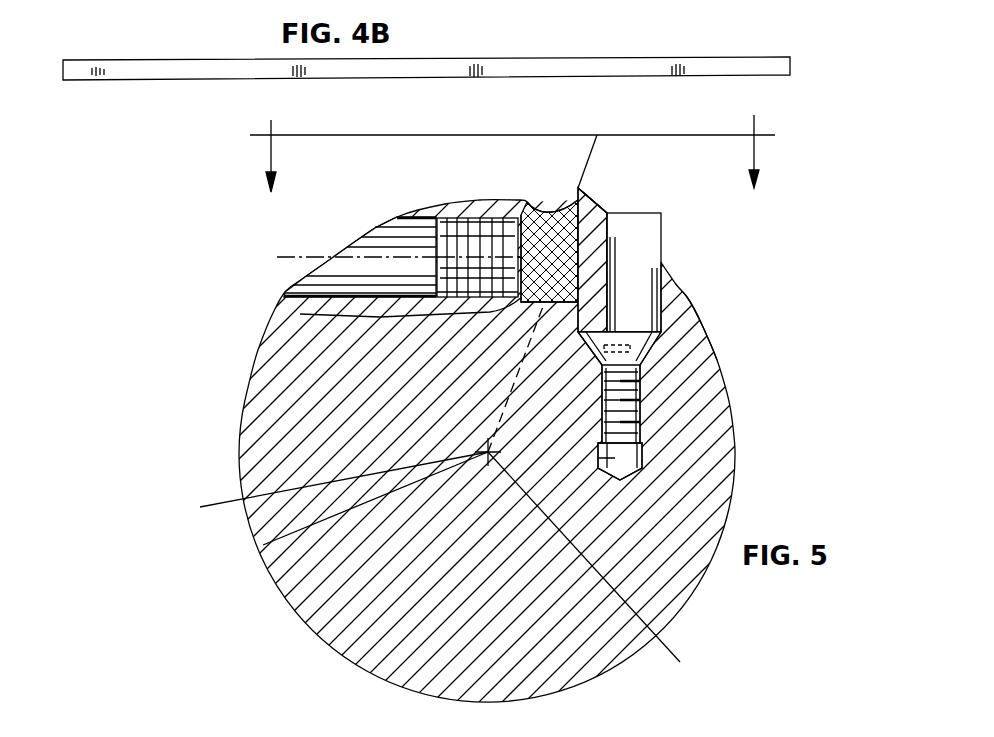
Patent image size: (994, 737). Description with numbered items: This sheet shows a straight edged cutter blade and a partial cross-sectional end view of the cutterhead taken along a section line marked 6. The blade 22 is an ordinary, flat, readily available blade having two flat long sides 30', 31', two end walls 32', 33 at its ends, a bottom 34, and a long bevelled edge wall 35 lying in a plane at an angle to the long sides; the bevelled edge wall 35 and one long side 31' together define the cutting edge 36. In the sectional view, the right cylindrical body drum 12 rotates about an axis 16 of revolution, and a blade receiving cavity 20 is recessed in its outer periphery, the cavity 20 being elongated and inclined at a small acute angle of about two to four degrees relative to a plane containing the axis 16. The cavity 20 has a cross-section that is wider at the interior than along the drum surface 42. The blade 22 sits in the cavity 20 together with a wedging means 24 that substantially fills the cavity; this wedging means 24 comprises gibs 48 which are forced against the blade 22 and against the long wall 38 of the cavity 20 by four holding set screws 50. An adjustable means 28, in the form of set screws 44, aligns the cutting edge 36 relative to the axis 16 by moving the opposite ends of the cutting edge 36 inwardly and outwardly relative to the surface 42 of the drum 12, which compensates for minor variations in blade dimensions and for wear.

In FIG. 5, the section line 6- 6 is at (511, 156).
In FIG. 5, the body drum 12 is at (265, 382).
In FIG. 5, the axis of revolution 16 is at (263, 545).
In FIG. 5, the cavity 20 is at (305, 314).
In FIG. 5, the blade 22 is at (600, 237).
In FIG. 5, the wedging means 24 is at (400, 198).
In FIG. 5, the adjustable means 28 is at (643, 390).
In FIG. 4B, the flat long side 30' is at (426, 53).
In FIG. 4B, the flat long side 31' is at (482, 86).
In FIG. 4B, the end wall 32' is at (90, 52).
In FIG. 4B, the end wall 33 is at (790, 63).
In FIG. 4B, the bottom 34 is at (222, 68).
In FIG. 5, the bevelled edge wall 35 is at (590, 197).
In FIG. 5, the cutting edge 36 is at (583, 179).
In FIG. 5, the long wall of the cavity 38 is at (603, 284).
In FIG. 5, the drum surface 42 is at (684, 312).
In FIG. 5, the set screws 44 is at (645, 443).
In FIG. 5, the gibs 48 is at (547, 212).
In FIG. 5, the holding set screws 50 is at (475, 232).